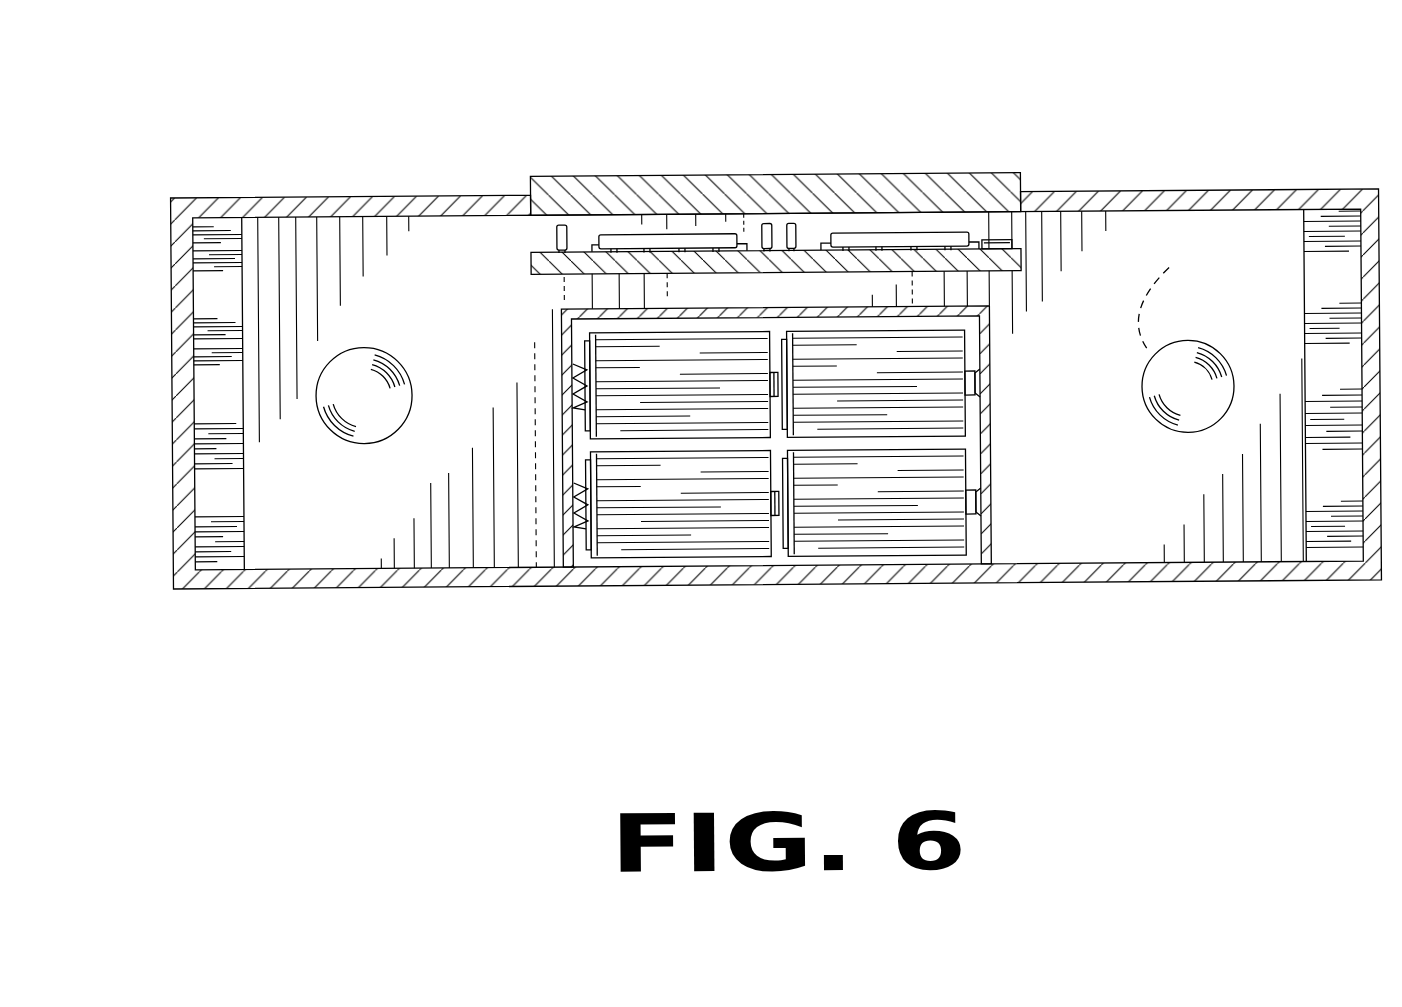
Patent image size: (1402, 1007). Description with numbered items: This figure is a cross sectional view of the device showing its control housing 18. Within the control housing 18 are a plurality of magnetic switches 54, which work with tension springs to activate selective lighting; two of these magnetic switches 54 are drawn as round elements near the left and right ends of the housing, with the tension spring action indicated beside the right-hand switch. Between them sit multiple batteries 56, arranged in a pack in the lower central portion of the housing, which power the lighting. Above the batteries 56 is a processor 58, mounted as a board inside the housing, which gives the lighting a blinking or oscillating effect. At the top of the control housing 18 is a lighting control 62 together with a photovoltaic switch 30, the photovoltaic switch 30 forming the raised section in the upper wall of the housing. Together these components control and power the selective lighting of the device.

The control housing 18 is at (1178, 198).
The photovoltaic switch 30 is at (823, 180).
The magnetic switch 54 is at (345, 440).
The batteries 56 is at (738, 562).
The processor 58 is at (543, 255).
The lighting control 62 is at (708, 170).